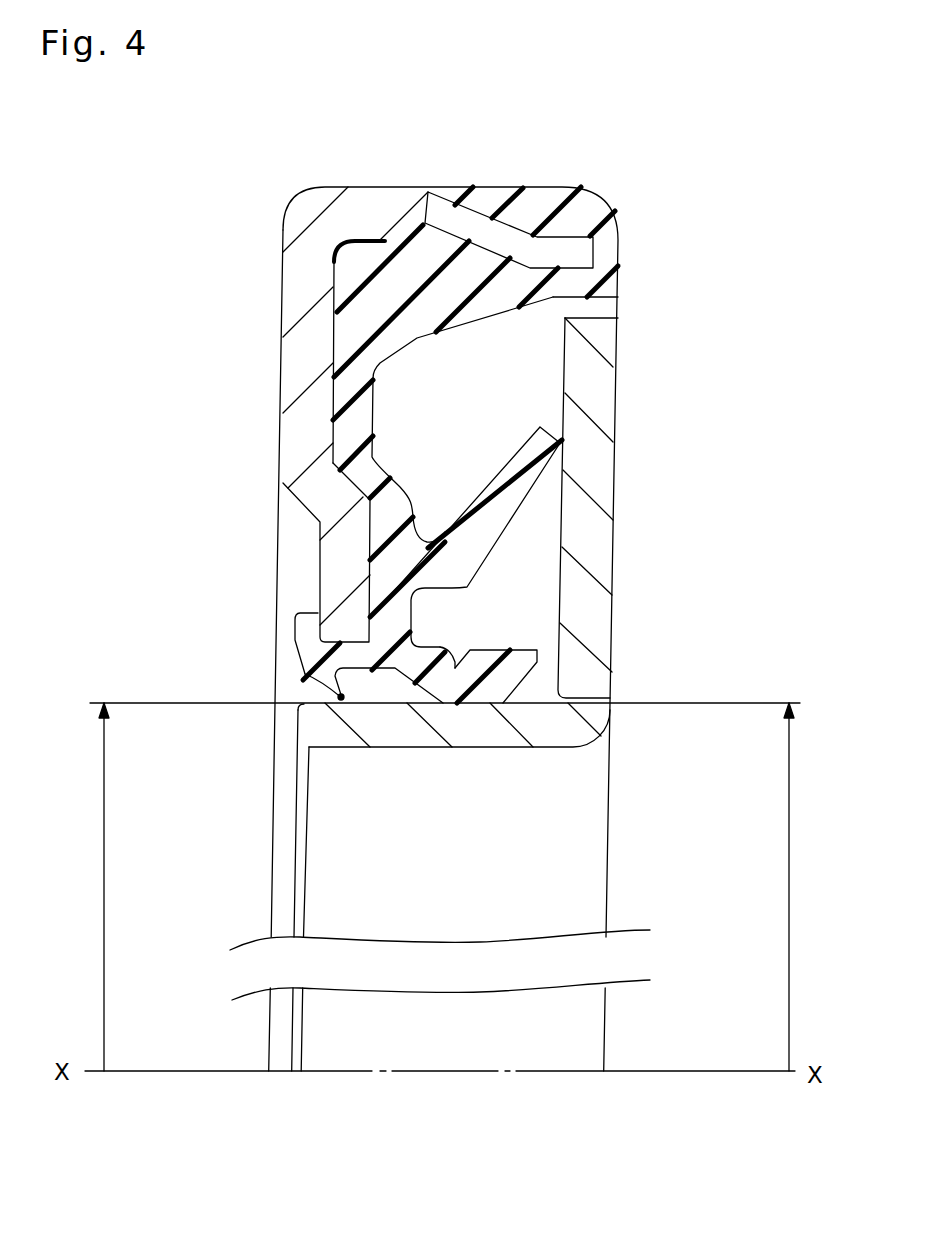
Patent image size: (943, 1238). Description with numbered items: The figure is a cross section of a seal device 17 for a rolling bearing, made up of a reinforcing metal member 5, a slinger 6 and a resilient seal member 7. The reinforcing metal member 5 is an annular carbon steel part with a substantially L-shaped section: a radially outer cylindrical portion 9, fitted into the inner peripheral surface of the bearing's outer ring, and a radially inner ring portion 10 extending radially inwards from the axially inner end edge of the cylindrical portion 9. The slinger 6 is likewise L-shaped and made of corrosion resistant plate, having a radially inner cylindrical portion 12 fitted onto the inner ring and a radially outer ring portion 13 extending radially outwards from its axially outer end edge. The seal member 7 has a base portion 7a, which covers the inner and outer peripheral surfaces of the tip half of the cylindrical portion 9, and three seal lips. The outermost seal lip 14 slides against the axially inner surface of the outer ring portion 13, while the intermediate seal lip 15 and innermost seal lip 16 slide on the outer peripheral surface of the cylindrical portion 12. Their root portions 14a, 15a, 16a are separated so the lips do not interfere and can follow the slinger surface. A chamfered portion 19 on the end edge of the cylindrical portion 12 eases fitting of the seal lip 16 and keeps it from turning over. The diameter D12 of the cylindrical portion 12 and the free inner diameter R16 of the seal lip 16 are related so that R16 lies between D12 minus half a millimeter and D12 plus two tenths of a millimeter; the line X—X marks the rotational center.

The reinforcing metal member 5 is at (406, 198).
The radially outer cylindrical portion 9 is at (320, 235).
The radially inner ring portion 10 is at (306, 364).
The seal device 17 is at (620, 412).
The slinger 6 is at (596, 542).
The radially outer ring portion 13 is at (603, 333).
The seal member 7 is at (318, 647).
The base portion 7a is at (387, 330).
The outermost seal lip 14 is at (553, 450).
The root portion of outermost seal lip 14a is at (428, 548).
The intermediate seal lip 15 is at (525, 663).
The root portion of intermediate seal lip 15a is at (418, 660).
The innermost seal lip 16 is at (345, 692).
The root portion of innermost seal lip 16a is at (337, 698).
The chamfered portion 19 is at (297, 707).
The radially inner cylindrical portion 12 is at (382, 733).
The inner diameter of seal lip 16 R16 is at (108, 805).
The diameter of cylindrical portion 12 D12 is at (788, 932).